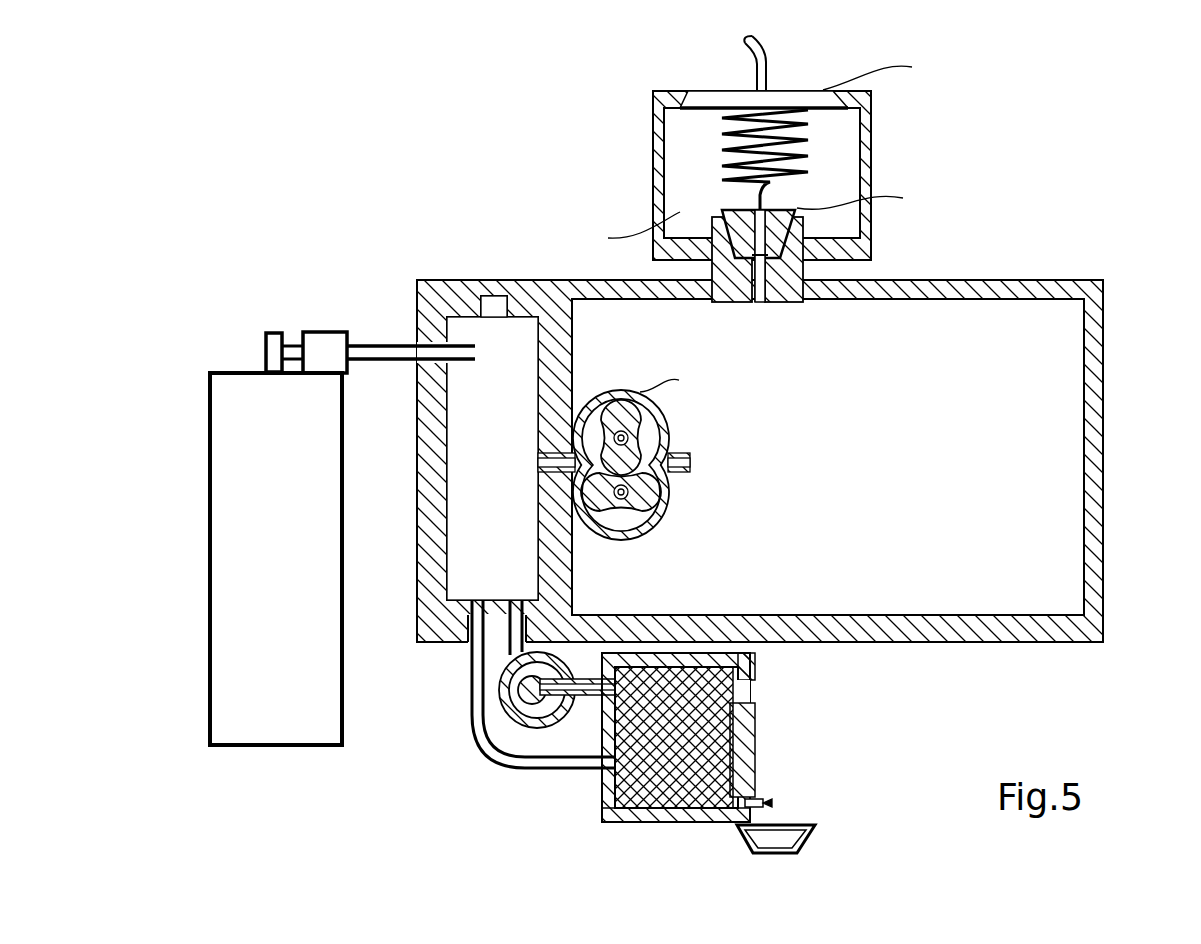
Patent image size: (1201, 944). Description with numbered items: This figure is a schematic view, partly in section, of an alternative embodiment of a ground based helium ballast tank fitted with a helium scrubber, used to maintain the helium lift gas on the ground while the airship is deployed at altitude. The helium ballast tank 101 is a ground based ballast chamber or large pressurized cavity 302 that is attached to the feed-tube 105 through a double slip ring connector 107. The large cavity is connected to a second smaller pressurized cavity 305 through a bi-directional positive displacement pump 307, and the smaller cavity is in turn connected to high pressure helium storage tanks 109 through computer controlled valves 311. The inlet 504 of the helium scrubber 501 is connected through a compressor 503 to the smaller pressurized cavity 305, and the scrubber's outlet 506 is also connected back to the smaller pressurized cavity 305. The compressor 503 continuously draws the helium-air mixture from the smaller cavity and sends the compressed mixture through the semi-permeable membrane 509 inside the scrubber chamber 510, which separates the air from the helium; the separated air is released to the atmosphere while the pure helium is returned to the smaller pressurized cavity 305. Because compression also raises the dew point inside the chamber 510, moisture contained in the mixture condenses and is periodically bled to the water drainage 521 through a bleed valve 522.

The helium ballast tank 101 is at (1103, 425).
The feed-tube 105 is at (760, 50).
The double slip ring connector 107 is at (653, 152).
The high pressure helium storage tank 109 is at (293, 727).
The large pressurized cavity 302 is at (907, 437).
The second smaller pressurized cavity 305 is at (510, 547).
The bi-directional positive displacement pump 307 is at (670, 430).
The computer controlled valves 311 is at (325, 345).
The helium scrubber 501 is at (753, 718).
The compressor 503 is at (512, 725).
The inlet 504 is at (472, 653).
The outlet 506 is at (523, 633).
The semi-permeable membrane 509 is at (615, 783).
The scrubber chamber 510 is at (700, 822).
The water drainage 521 is at (815, 825).
The bleed valve 522 is at (765, 805).